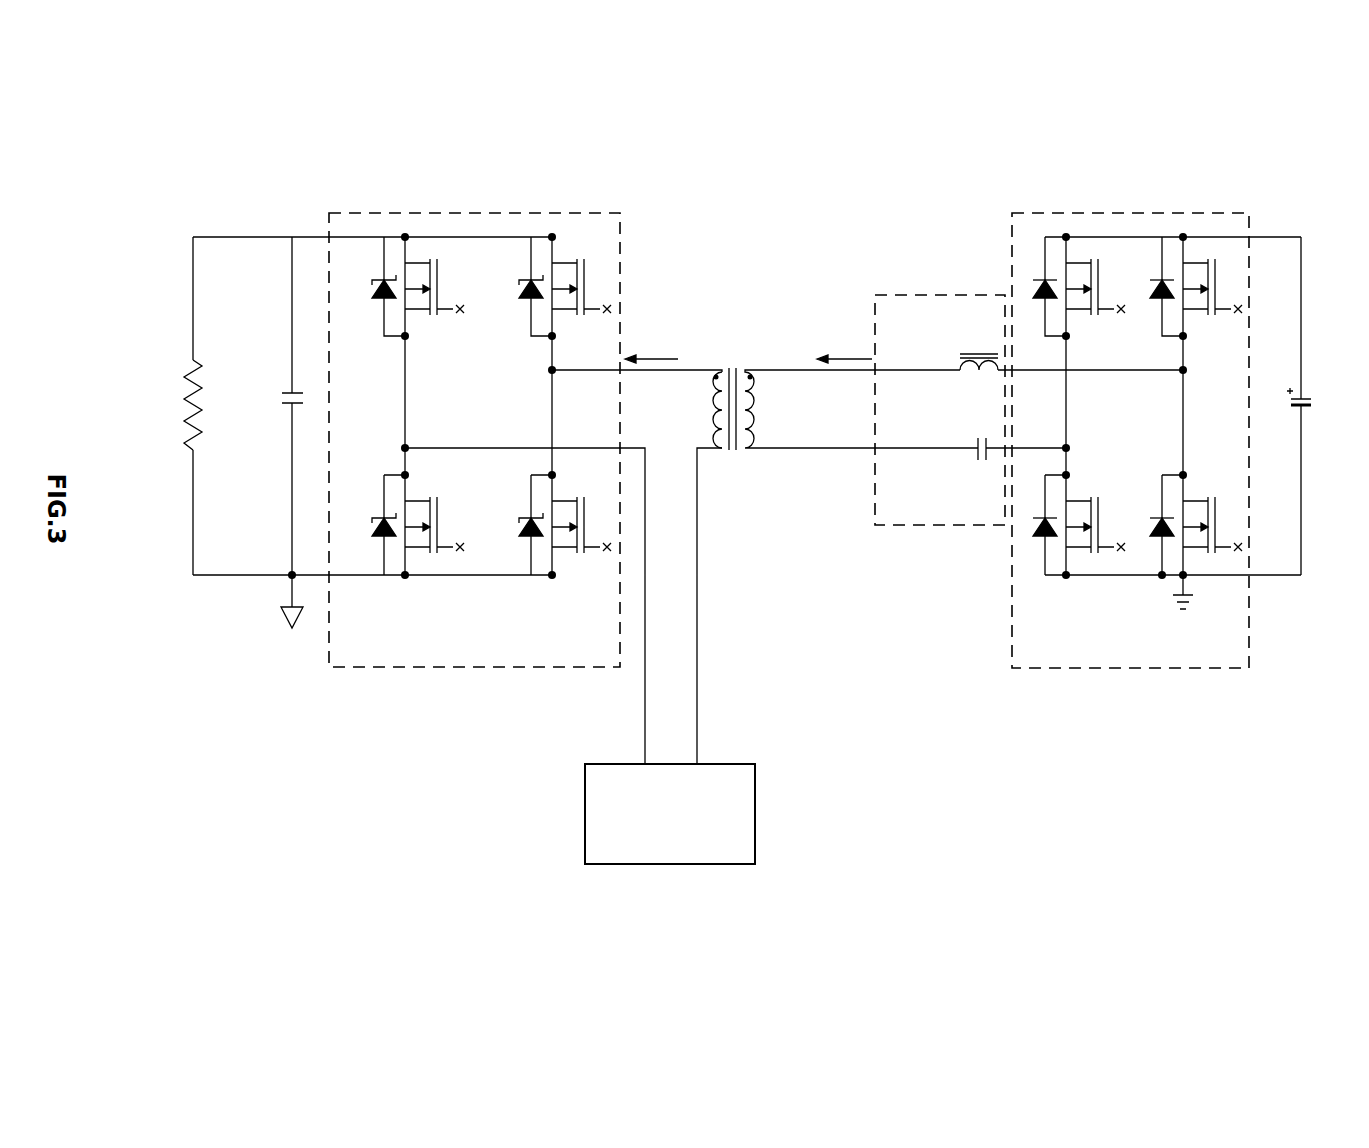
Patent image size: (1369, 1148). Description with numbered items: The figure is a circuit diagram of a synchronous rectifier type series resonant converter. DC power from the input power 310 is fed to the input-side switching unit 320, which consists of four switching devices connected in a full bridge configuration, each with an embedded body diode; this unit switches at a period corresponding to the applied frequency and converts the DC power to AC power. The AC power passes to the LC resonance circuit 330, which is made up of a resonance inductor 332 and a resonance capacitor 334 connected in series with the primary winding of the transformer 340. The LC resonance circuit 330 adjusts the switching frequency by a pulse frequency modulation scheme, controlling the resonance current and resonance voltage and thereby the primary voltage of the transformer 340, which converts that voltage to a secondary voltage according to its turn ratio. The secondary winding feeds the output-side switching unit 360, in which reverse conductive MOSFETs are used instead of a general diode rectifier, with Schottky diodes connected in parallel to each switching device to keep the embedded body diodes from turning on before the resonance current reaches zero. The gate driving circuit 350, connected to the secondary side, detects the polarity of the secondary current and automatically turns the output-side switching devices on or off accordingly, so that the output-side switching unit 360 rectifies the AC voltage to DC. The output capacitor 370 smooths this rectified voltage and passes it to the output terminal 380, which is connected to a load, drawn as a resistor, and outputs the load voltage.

The input power 310 is at (1305, 395).
The input-side switching unit 320 is at (1132, 212).
The LC resonance circuit 330 is at (967, 429).
The resonance inductor 332 is at (875, 313).
The resonance capacitor 334 is at (875, 480).
The transformer 340 is at (753, 342).
The gate driving circuit 350 is at (605, 762).
The output-side switching unit 360 is at (532, 212).
The output capacitor 370 is at (245, 350).
The output terminal 380 is at (157, 400).